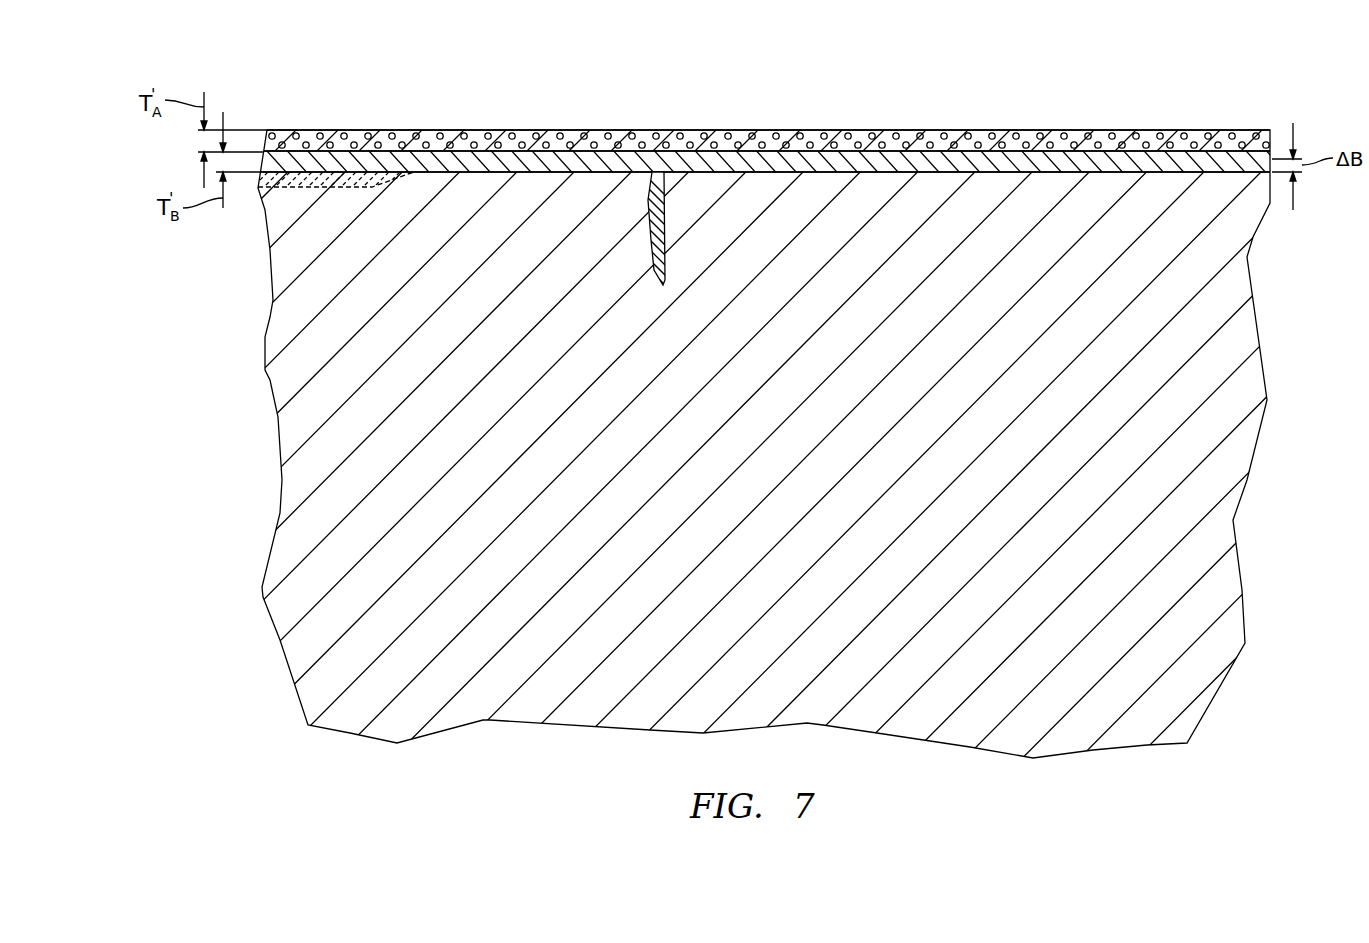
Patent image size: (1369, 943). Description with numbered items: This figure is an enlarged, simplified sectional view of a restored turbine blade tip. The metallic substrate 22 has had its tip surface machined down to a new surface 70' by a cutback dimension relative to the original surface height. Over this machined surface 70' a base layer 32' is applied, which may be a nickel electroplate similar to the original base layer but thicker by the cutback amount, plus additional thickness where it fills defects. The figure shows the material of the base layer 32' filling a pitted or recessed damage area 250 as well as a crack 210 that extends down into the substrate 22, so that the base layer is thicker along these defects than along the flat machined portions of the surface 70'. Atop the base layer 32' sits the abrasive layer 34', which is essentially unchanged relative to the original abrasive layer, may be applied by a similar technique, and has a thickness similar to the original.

The metallic substrate 22 is at (527, 695).
The abrasive layer 34' is at (767, 105).
The base layer 32' is at (773, 120).
The machined substrate surface 70' is at (765, 120).
The damage area 250 is at (371, 170).
The crack 210 is at (652, 243).